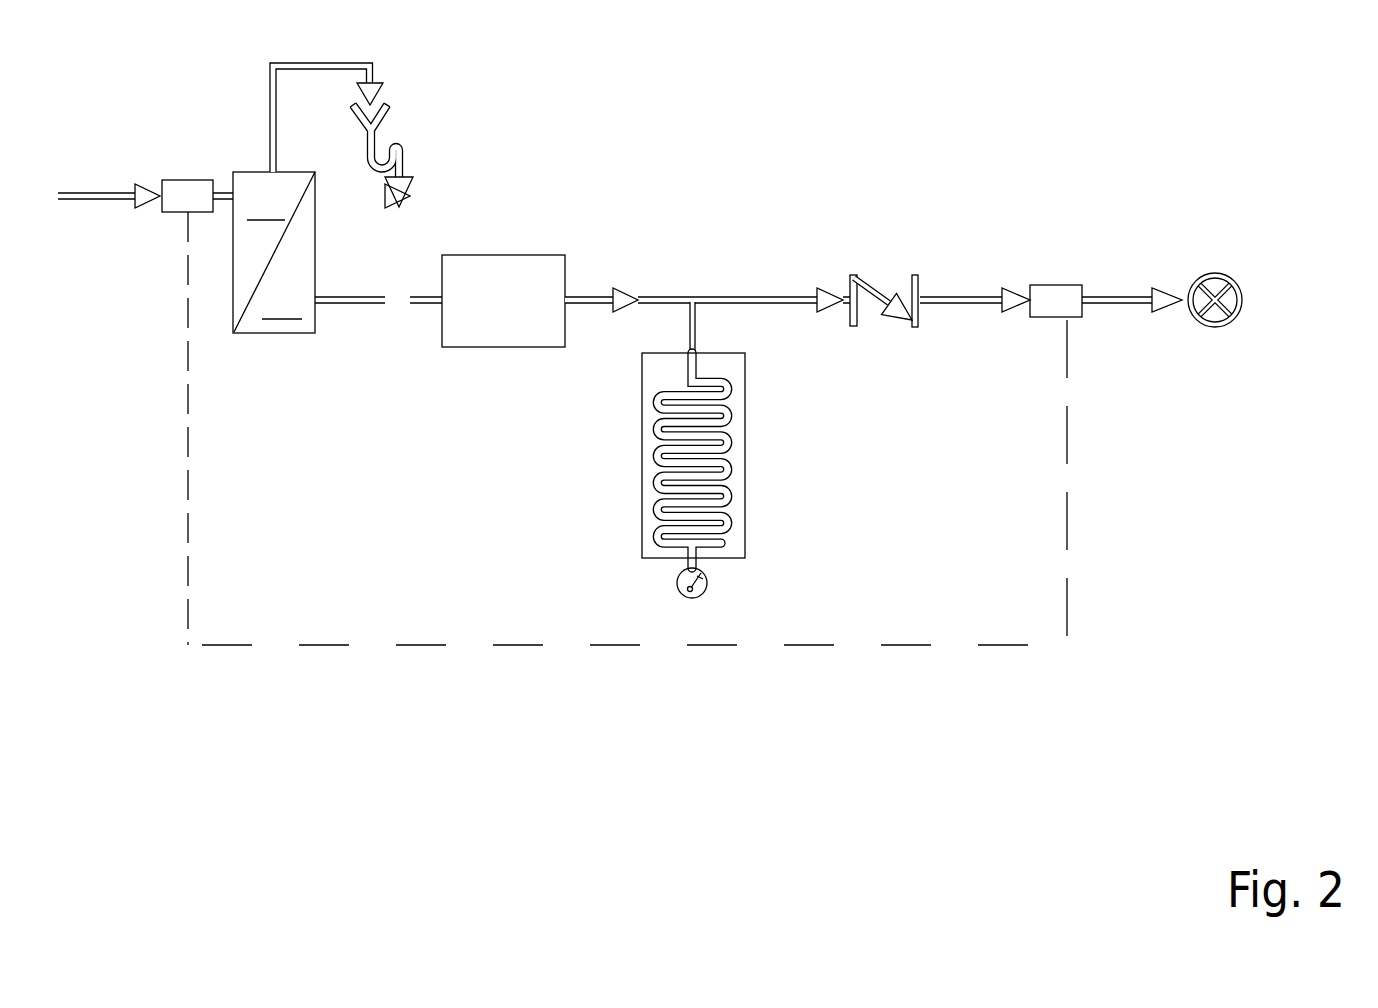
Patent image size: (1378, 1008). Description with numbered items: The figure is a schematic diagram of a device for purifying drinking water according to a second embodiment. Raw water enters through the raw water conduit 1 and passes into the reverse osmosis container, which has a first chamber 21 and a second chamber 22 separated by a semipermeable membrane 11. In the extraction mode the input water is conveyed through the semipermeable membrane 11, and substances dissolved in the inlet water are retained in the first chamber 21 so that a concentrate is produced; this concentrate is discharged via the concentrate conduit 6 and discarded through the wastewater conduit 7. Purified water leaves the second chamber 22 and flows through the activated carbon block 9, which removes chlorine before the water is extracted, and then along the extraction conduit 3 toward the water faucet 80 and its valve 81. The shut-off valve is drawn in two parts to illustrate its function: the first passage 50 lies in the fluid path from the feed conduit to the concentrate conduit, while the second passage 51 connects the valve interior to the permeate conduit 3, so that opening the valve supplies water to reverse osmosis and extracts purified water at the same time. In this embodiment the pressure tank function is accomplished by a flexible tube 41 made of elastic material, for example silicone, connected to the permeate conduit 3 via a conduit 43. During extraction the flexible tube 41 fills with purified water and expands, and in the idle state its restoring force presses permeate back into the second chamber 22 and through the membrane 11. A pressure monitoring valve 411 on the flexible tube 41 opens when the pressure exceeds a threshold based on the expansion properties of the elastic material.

The raw water conduit 1 is at (118, 183).
The first passage 50 is at (187, 185).
The semipermeable membrane 11 is at (303, 202).
The first chamber 21 is at (265, 205).
The second chamber 22 is at (281, 303).
The concentrate conduit 6 is at (355, 63).
The wastewater conduit 7 is at (407, 147).
The activated carbon block 9 is at (503, 252).
The extraction conduit 3 is at (653, 297).
The conduit 43 is at (698, 325).
The flexible tube 41 is at (640, 480).
The pressure monitoring valve 411 is at (708, 585).
The valve 81 is at (878, 268).
The second passage 51 is at (1067, 282).
The water faucet 80 is at (1228, 280).